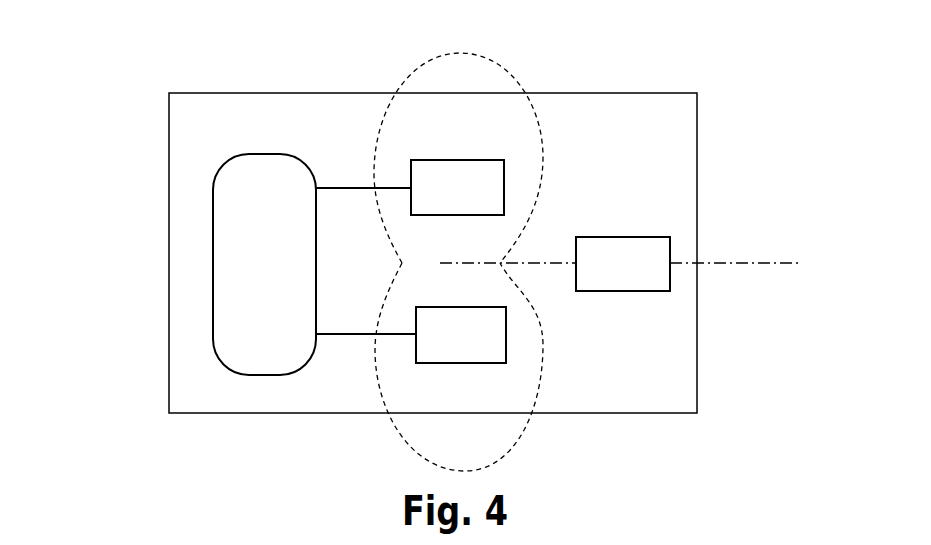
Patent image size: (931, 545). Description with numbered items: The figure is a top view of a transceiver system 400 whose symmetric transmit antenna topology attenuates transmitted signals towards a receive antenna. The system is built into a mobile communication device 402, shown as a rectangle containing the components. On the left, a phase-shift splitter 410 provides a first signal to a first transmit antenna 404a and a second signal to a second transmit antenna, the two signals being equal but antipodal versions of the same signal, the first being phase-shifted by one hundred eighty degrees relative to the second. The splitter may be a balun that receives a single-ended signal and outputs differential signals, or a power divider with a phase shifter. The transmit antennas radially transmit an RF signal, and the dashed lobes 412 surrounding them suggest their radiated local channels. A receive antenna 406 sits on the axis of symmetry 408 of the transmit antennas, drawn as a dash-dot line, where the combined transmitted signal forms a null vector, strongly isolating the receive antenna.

The transceiver system 400 is at (108, 68).
The mobile communication device 402 is at (663, 87).
The first transmit antenna 404a is at (411, 261).
The receive antenna 406 is at (623, 264).
The axis of symmetry 408 is at (784, 253).
The phase-shift splitter 410 is at (260, 150).
The radiation pattern region 412 is at (518, 66).